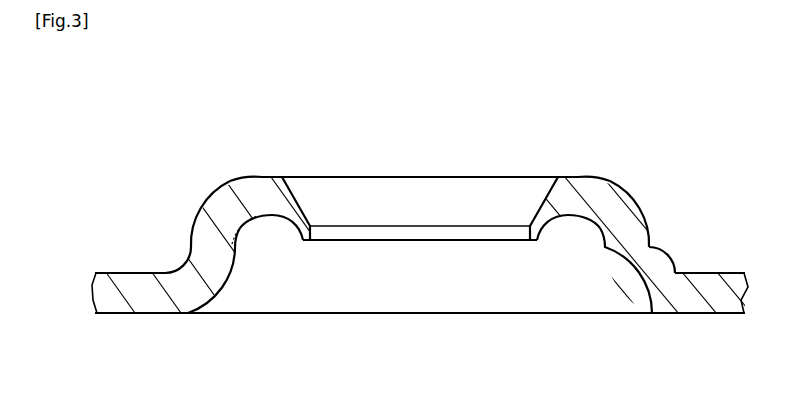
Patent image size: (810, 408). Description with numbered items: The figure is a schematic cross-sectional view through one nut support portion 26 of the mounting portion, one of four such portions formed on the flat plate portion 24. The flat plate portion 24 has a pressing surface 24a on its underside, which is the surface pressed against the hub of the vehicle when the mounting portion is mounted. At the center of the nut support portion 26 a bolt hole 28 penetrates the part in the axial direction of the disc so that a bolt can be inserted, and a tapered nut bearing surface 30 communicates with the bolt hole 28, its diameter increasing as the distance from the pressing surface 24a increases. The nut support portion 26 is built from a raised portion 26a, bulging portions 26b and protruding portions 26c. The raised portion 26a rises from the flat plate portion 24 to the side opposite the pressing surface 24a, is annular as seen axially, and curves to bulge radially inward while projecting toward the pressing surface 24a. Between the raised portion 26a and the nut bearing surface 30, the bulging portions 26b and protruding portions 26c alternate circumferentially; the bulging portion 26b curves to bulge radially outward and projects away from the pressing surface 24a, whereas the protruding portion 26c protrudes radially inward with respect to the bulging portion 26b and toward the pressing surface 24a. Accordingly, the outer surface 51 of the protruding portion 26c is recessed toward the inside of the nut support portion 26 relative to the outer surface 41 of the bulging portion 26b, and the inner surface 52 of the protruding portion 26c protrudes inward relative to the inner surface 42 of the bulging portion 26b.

The flat plate portion 24 is at (112, 290).
The pressing surface 24a is at (126, 314).
The nut support portion 26 is at (410, 195).
The raised portion 26a is at (183, 277).
The bulging portion 26b is at (222, 185).
The protruding portion 26c is at (222, 223).
The bolt hole 28 is at (320, 224).
The nut bearing surface 30 is at (484, 187).
The outer surface of the bulging portion 41 is at (231, 182).
The inner surface of the bulging portion 42 is at (248, 220).
The outer surface of the protruding portion 51 is at (218, 203).
The inner surface of the protruding portion 52 is at (253, 243).